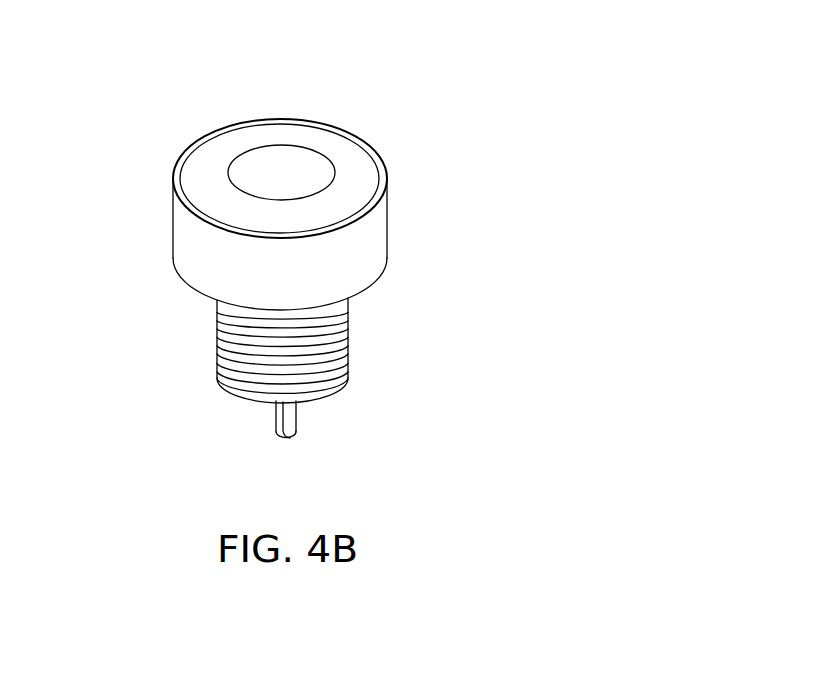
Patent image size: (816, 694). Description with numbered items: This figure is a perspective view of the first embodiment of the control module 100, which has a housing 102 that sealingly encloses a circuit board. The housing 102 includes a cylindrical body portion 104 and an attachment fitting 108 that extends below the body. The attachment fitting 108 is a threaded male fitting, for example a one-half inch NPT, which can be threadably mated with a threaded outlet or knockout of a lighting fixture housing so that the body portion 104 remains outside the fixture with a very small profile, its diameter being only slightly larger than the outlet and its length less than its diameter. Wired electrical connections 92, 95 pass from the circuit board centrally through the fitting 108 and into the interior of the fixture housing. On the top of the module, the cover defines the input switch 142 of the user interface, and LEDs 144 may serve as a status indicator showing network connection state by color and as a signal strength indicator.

The control module 100 is at (319, 238).
The housing 102 is at (291, 183).
The cylindrical body portion 104 is at (387, 248).
The attachment fitting 108 is at (348, 363).
The input switch 142 is at (240, 158).
The LEDs 144 is at (387, 178).
The wired electrical connection 92 is at (350, 427).
The wired electrical connection 95 is at (297, 423).